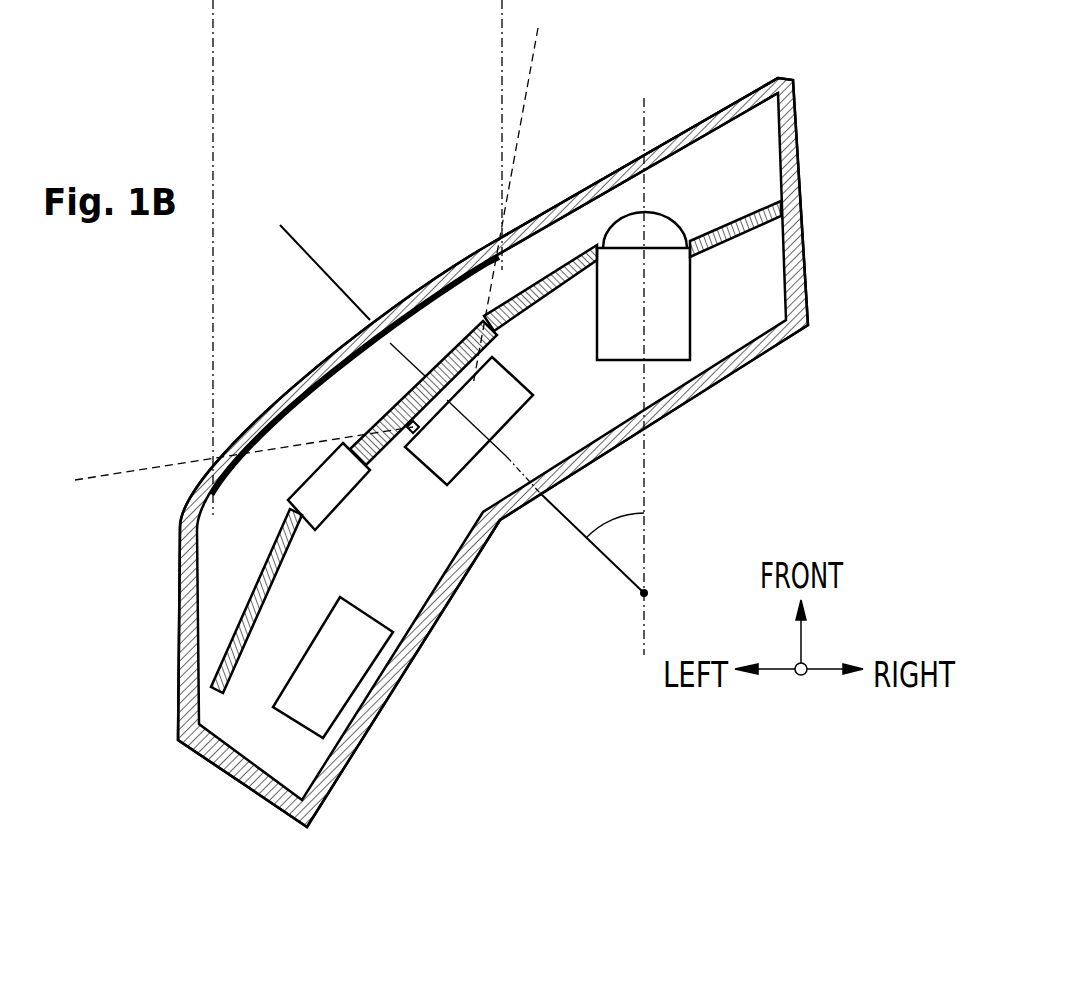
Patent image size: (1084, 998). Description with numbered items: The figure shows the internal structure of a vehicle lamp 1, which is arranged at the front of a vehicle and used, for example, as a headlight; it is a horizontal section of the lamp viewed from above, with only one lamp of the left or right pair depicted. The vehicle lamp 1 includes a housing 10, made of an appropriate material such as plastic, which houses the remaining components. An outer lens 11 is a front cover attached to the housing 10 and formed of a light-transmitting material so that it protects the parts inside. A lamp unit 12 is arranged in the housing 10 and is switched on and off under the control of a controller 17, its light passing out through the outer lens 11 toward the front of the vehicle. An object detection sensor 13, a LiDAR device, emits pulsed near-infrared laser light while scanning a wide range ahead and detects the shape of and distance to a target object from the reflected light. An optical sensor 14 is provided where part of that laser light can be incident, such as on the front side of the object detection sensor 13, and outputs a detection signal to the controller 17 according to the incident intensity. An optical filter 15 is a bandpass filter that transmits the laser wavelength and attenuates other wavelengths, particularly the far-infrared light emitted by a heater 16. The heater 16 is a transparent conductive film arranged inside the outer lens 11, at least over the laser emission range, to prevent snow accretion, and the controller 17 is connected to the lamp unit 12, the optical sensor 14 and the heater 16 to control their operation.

The vehicle lamp 1 is at (503, 893).
The housing 10 is at (772, 347).
The outer lens 11 is at (733, 102).
The lamp unit 12 is at (660, 362).
The object detection sensor 13 is at (463, 463).
The optical sensor 14 is at (412, 432).
The optical filter 15 is at (447, 352).
The heater 16 is at (322, 404).
The controller 17 is at (288, 720).